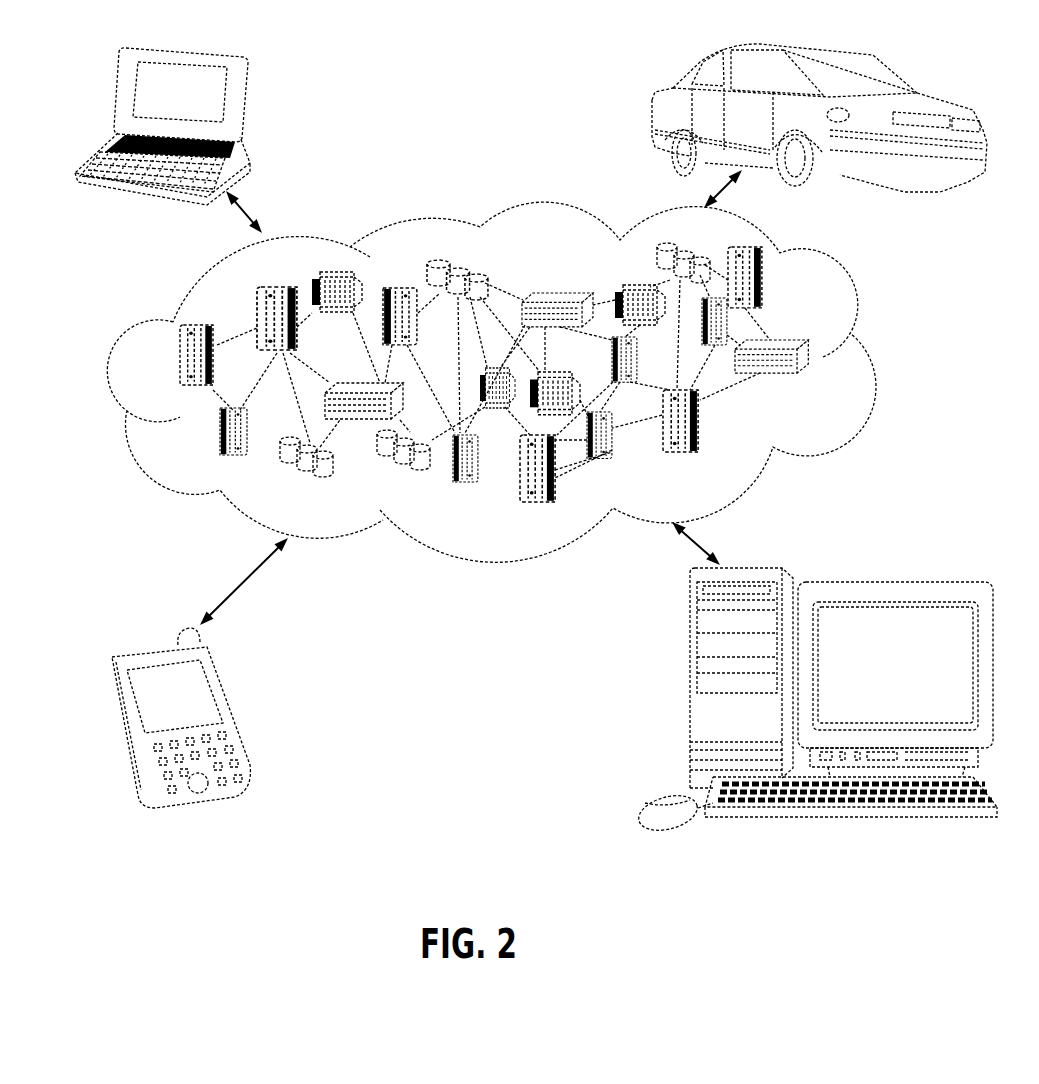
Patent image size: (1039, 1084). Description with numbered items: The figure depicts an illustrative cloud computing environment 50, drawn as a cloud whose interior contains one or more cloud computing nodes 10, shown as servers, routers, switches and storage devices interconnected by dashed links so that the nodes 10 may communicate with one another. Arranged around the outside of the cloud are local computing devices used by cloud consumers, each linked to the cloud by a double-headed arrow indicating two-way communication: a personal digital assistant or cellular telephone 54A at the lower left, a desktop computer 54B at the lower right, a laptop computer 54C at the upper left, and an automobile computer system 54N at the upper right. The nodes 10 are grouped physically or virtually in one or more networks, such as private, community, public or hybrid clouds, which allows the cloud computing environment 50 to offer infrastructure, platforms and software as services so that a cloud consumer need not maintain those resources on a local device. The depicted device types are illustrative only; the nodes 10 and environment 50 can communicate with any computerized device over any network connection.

The cloud computing node 10 is at (833, 383).
The cloud computing environment 50 is at (857, 317).
The personal digital assistant or cellular telephone 54A is at (232, 712).
The desktop computer 54B is at (690, 687).
The laptop computer 54C is at (243, 98).
The automobile computer system 54N is at (660, 103).